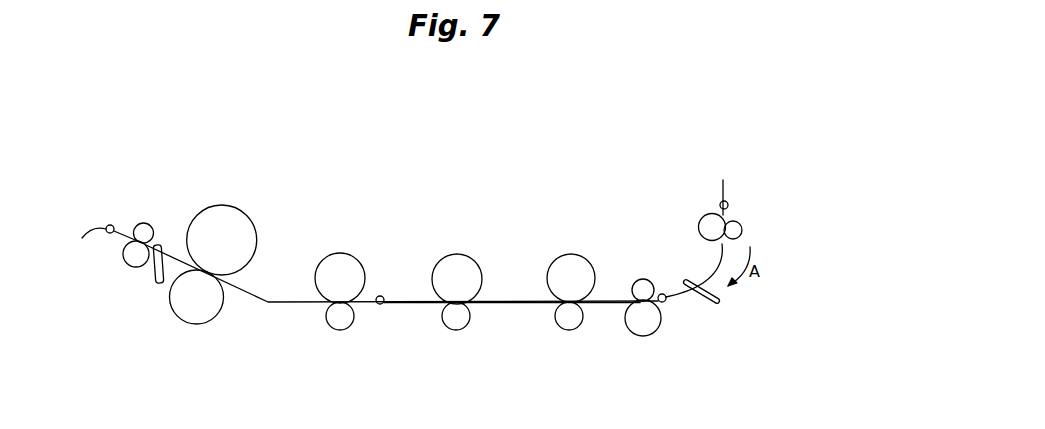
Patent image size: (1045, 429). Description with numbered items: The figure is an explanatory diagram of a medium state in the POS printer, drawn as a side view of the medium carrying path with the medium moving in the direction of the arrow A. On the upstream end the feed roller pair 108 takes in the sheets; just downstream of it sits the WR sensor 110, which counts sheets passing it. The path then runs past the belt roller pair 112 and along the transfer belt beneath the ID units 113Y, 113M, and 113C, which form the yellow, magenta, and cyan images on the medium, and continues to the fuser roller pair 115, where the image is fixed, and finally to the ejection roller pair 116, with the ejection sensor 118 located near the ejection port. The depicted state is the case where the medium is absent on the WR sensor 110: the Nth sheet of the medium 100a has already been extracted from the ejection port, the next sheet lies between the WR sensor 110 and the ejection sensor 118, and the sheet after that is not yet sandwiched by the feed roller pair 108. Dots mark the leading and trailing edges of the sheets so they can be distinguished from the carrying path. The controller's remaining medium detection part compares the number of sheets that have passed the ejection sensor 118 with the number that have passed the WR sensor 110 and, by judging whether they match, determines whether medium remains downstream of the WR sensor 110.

The Nth sheet of the medium 100a is at (763, 193).
The feed roller pair 108 is at (699, 221).
The WR sensor 110 is at (702, 304).
The belt roller pair 112 is at (636, 336).
The ID unit 113C is at (341, 253).
The ID unit 113M is at (457, 254).
The ID unit 113Y is at (571, 254).
The fuser roller pair 115 is at (193, 324).
The ejection roller pair 116 is at (124, 268).
The ejection sensor 118 is at (158, 244).